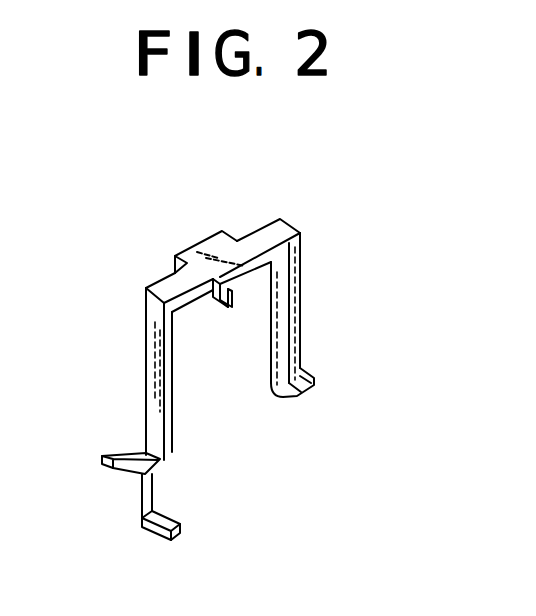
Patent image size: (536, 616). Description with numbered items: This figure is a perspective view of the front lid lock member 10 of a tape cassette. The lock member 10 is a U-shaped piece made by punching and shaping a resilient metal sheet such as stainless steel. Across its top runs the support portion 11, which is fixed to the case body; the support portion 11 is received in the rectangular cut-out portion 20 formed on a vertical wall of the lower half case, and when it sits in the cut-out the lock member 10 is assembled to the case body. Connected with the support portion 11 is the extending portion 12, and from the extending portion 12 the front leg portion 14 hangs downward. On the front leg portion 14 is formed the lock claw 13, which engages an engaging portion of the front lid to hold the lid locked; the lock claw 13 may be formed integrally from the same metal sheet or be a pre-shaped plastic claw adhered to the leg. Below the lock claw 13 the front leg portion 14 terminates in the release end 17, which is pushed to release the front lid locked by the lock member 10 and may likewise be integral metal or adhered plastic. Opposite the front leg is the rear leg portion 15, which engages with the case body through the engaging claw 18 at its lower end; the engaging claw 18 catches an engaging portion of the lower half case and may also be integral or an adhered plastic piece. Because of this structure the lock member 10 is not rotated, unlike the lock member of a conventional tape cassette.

The lock member 10 is at (267, 164).
The support portion 11 is at (197, 247).
The extending portion 12 is at (165, 290).
The lock claw 13 is at (103, 456).
The front leg portion 14 is at (152, 353).
The rear leg portion 15 is at (300, 312).
The release end 17 is at (160, 528).
The engaging claw 18 is at (315, 383).
The cut-out portion 20 is at (246, 296).